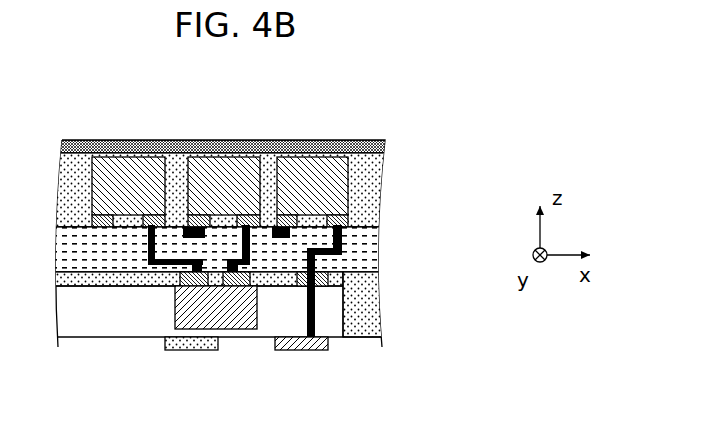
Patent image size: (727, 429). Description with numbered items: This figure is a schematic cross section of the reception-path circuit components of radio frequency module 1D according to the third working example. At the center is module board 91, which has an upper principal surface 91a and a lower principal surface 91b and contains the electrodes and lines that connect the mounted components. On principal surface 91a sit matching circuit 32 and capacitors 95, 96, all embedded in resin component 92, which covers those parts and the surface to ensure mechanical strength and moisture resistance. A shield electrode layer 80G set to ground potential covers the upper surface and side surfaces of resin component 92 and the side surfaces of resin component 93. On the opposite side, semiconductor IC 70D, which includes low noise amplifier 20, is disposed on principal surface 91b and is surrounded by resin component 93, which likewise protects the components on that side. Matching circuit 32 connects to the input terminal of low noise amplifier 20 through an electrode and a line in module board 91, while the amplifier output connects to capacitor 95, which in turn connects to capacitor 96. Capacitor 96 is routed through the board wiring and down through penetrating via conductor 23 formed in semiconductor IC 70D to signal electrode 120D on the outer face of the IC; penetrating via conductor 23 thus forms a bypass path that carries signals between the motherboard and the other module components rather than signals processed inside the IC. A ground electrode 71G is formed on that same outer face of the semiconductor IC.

The radio frequency module 1D is at (455, 141).
The shield electrode layer 80G is at (92, 146).
The resin component 92 is at (364, 190).
The matching circuit 32 is at (138, 180).
The capacitor 95 is at (228, 180).
The capacitor 96 is at (311, 180).
The principal surface 91a is at (373, 218).
The module board 91 is at (368, 242).
The principal surface 91b is at (368, 277).
The resin component 93 is at (373, 313).
The low noise amplifier 20 is at (237, 327).
The penetrating via conductor 23 is at (318, 333).
The semiconductor IC 70D is at (145, 338).
The ground electrode 71G is at (187, 343).
The signal electrode 120D is at (303, 352).